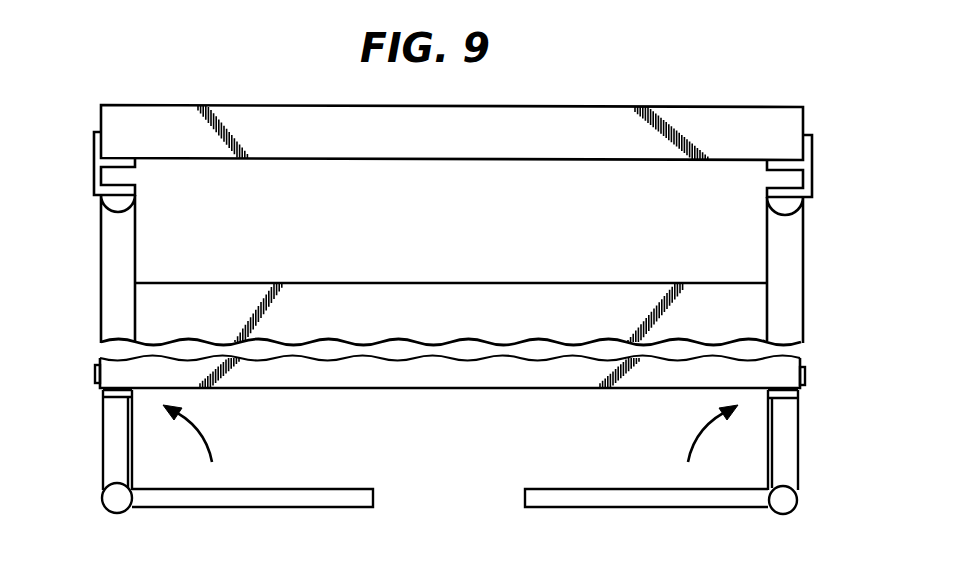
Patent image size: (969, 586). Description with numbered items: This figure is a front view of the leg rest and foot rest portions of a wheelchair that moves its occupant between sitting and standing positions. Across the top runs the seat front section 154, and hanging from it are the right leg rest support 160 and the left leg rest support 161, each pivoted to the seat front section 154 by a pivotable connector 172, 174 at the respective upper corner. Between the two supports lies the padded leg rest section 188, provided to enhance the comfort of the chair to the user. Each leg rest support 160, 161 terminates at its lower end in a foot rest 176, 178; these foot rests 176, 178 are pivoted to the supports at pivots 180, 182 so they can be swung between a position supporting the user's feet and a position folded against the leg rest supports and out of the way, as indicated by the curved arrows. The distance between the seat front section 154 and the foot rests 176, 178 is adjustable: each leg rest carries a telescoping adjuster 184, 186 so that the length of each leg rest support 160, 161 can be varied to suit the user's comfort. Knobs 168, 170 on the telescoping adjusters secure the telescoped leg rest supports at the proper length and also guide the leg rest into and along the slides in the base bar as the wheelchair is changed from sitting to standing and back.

The seat front section 154 is at (685, 118).
The pivotable connector 172 is at (95, 138).
The pivotable connector 174 is at (812, 160).
The right leg rest support 160 is at (113, 248).
The left leg rest support 161 is at (793, 270).
The padded leg rest section 188 is at (447, 293).
The knob 168 is at (95, 375).
The knob 170 is at (806, 377).
The telescoping adjuster 184 is at (102, 395).
The telescoping adjuster 186 is at (798, 398).
The foot rest pivot 180 is at (110, 498).
The foot rest pivot 182 is at (788, 503).
The foot rest 176 is at (262, 498).
The foot rest 178 is at (611, 497).